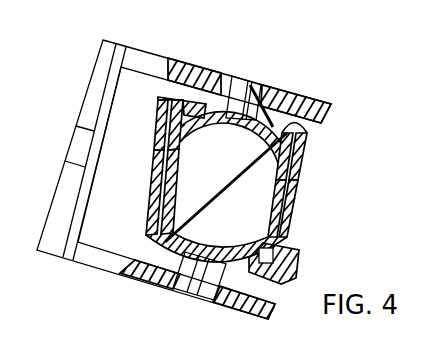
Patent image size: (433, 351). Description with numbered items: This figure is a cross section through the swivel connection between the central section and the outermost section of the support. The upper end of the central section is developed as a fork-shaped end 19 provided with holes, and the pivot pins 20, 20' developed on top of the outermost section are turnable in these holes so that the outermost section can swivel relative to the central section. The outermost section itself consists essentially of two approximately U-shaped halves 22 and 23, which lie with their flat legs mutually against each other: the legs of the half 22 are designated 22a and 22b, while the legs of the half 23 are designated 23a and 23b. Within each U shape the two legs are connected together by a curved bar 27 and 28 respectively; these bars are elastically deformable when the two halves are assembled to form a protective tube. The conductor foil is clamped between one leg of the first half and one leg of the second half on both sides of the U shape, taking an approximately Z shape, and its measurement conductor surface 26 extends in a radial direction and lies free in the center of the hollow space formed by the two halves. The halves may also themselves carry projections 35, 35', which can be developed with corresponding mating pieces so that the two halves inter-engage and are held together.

The fork-shaped end 19 is at (140, 280).
The pivot pin 20 is at (199, 292).
The pivot pin 20' is at (290, 89).
The U-shaped half 22 is at (146, 258).
The leg 22a is at (152, 189).
The leg 22b is at (297, 206).
The U-shaped half 23 is at (308, 136).
The leg 23a is at (160, 156).
The leg 23b is at (299, 184).
The measurement conductor surface 26 is at (214, 200).
The curved bar 27 is at (232, 78).
The curved bar 28 is at (244, 313).
The projection 35 is at (194, 58).
The projection 35' is at (303, 262).